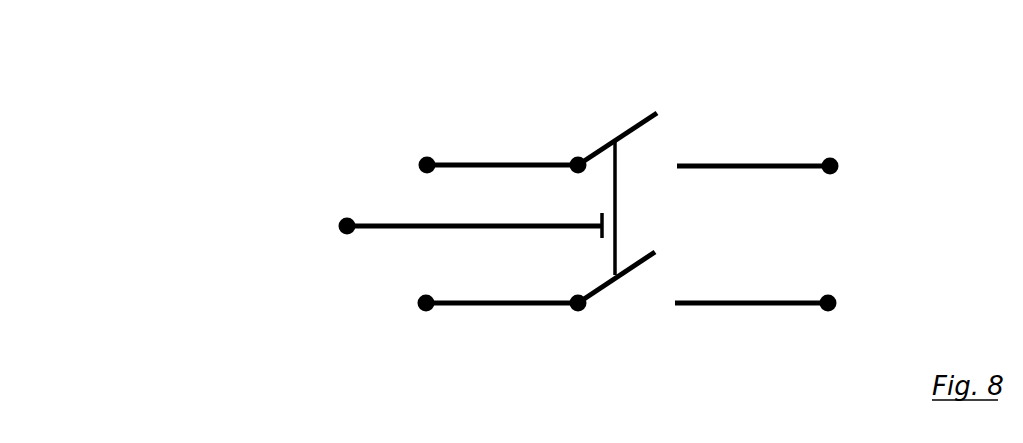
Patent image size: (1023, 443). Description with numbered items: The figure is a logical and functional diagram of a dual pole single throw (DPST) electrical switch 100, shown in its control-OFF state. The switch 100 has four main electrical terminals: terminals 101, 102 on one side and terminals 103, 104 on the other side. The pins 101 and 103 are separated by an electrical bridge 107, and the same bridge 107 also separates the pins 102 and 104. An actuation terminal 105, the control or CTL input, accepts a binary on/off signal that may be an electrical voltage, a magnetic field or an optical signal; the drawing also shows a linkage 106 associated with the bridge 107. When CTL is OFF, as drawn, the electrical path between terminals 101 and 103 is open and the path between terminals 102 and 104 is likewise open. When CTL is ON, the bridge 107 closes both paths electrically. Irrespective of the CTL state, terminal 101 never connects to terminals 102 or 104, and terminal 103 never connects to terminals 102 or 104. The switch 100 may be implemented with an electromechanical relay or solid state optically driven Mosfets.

The DPST switch 100 is at (310, 53).
The electrical terminal 101 is at (405, 155).
The electrical terminal 102 is at (393, 302).
The electrical terminal 103 is at (845, 122).
The electrical terminal 104 is at (747, 318).
The actuation terminal 105 is at (320, 228).
The coupling bar 106 is at (593, 239).
The electrical bridge 107 is at (598, 125).